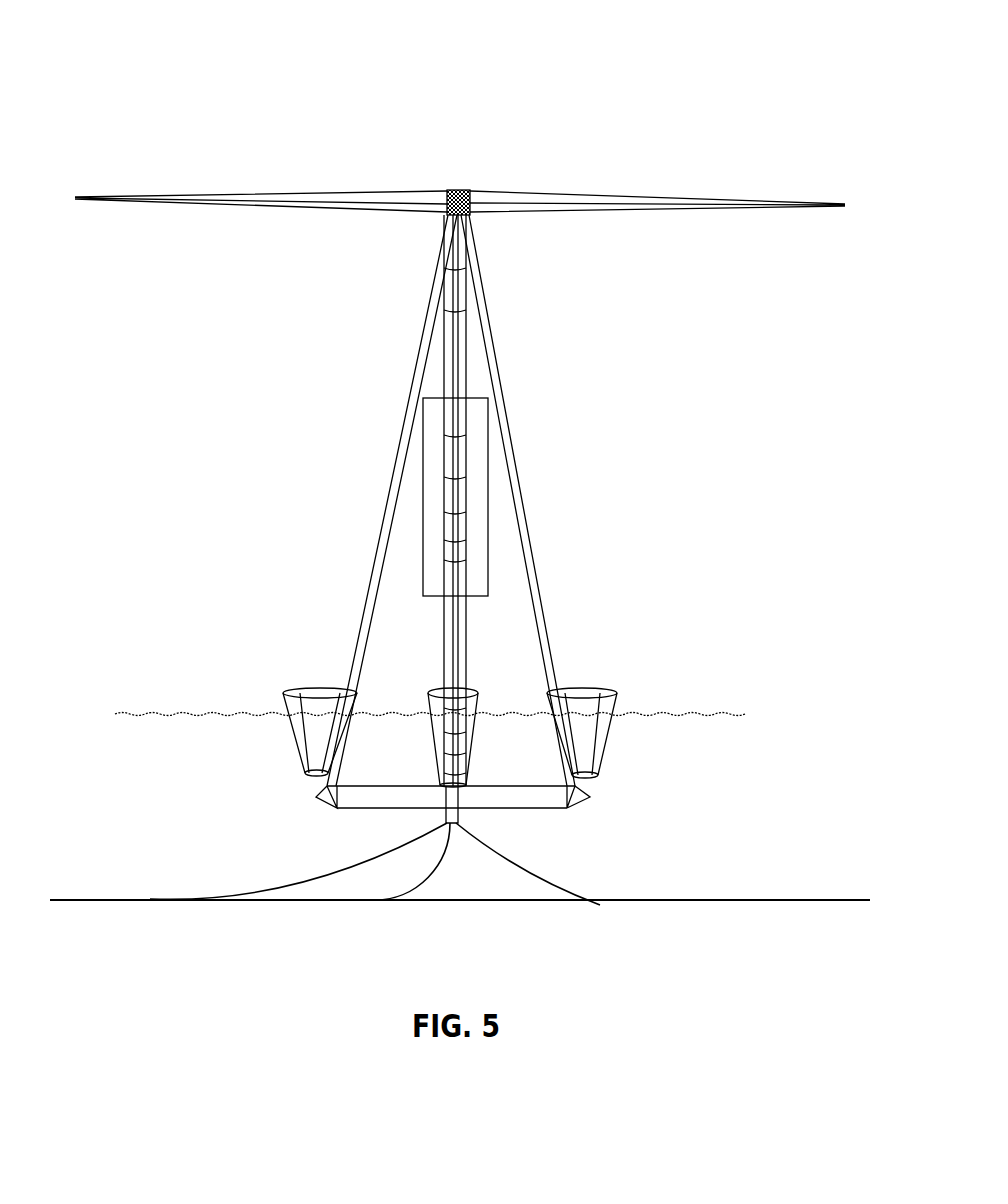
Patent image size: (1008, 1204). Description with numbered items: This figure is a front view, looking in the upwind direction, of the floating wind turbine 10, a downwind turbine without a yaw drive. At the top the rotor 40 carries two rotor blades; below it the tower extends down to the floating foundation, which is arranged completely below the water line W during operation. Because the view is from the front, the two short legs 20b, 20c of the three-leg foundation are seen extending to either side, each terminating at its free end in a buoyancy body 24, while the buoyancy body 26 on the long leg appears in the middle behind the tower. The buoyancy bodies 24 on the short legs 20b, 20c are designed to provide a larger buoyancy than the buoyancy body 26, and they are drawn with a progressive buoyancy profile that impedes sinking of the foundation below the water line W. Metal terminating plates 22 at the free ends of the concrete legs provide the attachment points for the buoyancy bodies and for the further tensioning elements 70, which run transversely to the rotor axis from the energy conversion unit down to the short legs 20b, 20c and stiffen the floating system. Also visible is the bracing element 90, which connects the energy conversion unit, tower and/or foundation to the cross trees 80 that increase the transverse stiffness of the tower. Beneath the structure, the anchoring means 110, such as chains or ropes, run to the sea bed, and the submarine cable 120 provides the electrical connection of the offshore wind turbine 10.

The floating wind turbine 10 is at (275, 134).
The rotor 40 is at (457, 191).
The bracing element 90 is at (490, 456).
The cross trees 80 is at (433, 592).
The further tensioning elements 70 is at (520, 503).
The buoyancy body 26 is at (480, 703).
The buoyancy bodies 24 is at (308, 693).
The terminating plates 22 is at (582, 802).
The short leg 20c is at (358, 802).
The short leg 20b is at (532, 804).
The anchoring means 110 is at (290, 886).
The submarine cable 120 is at (430, 878).
The water line W is at (413, 708).